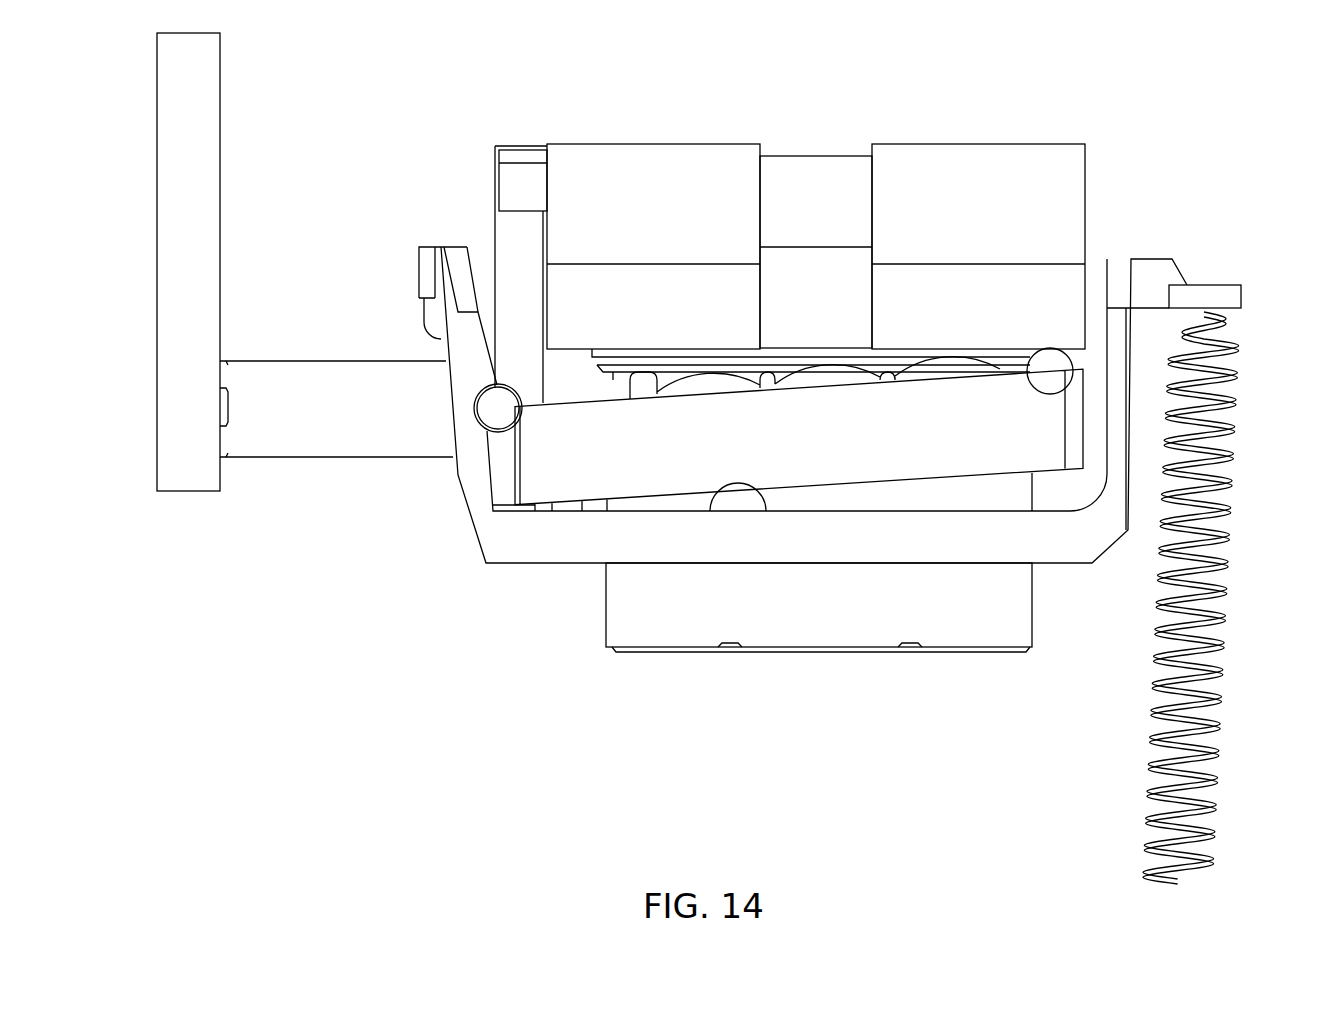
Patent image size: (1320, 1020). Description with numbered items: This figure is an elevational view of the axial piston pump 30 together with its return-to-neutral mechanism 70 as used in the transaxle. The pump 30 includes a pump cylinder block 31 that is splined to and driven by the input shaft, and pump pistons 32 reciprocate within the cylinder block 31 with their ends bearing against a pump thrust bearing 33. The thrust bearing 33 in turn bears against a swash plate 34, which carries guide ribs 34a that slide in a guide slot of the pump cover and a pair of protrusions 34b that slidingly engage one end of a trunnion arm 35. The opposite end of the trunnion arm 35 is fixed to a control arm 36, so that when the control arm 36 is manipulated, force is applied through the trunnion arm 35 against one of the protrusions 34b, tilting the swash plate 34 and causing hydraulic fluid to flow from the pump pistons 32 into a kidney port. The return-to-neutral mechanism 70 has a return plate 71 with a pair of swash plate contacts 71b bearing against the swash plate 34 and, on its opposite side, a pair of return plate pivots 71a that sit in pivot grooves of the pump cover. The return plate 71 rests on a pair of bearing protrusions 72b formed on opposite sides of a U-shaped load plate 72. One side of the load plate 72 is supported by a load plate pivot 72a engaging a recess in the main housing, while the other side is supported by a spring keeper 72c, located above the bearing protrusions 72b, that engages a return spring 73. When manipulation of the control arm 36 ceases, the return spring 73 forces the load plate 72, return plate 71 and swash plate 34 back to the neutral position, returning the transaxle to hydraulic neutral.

The axial piston pump 30 is at (787, 694).
The pump cylinder block 31 is at (830, 619).
The pump pistons 32 is at (703, 385).
The pump thrust bearing 33 is at (613, 373).
The swash plate 34 is at (990, 215).
The guide ribs 34a is at (808, 182).
The protrusions 34b is at (513, 182).
The trunnion arm 35 is at (513, 233).
The control arm 36 is at (221, 134).
The return-to-neutral mechanism 70 is at (1177, 213).
The return plate 71 is at (912, 437).
The return plate pivots 71a is at (497, 408).
The swash plate contacts 71b is at (1050, 373).
The load plate 72 is at (538, 548).
The load plate pivot 72a is at (441, 338).
The bearing protrusions 72b is at (757, 472).
The spring keeper 72c is at (1212, 290).
The return spring 73 is at (1218, 600).